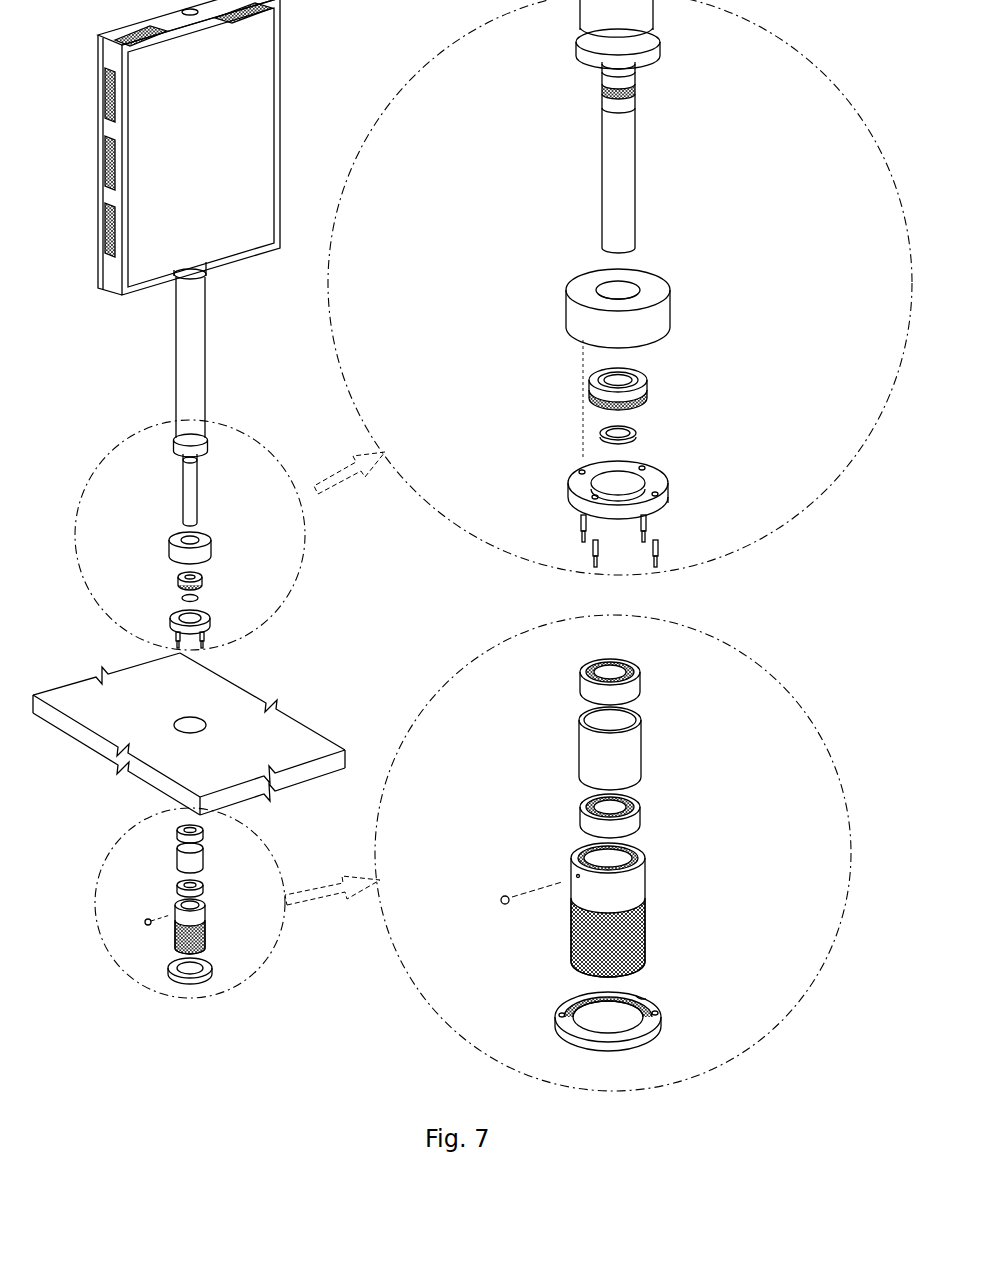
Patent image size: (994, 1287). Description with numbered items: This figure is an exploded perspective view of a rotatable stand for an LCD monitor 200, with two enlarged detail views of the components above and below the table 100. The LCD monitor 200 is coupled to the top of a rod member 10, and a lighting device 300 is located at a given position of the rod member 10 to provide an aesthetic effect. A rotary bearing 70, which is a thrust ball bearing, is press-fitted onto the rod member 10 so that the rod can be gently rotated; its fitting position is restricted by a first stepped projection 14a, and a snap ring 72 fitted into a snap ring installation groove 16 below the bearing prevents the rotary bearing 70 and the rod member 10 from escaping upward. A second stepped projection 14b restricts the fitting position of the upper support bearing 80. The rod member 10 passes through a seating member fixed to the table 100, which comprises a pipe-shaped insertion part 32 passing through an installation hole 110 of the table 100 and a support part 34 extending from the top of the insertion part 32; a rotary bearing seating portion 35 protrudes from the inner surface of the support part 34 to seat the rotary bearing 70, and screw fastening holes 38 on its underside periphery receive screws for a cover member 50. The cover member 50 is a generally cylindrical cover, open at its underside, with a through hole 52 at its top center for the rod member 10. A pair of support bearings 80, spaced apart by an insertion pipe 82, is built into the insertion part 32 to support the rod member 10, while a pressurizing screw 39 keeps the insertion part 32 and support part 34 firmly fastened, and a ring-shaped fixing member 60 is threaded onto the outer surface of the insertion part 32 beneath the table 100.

The LCD monitor 200 is at (262, 80).
The lighting device 300 is at (205, 344).
The rod member 10 is at (180, 490).
The first stepped projection 14a is at (610, 82).
The second stepped projection 14b is at (627, 110).
The snap ring installation groove 16 is at (640, 88).
The cover member 50 is at (673, 305).
The through hole 52 is at (633, 283).
The rotary bearing 70 is at (652, 370).
The snap ring 72 is at (638, 427).
The rotary bearing seating portion 35 is at (643, 478).
The screw fastening holes 38 is at (594, 496).
The support part 34 is at (668, 503).
The table 100 is at (292, 734).
The installation hole 110 is at (196, 717).
The support bearings 80 is at (645, 680).
The insertion pipe 82 is at (583, 743).
The insertion part 32 is at (643, 880).
The pressurizing screw 39 is at (502, 898).
The fixing member 60 is at (662, 1005).